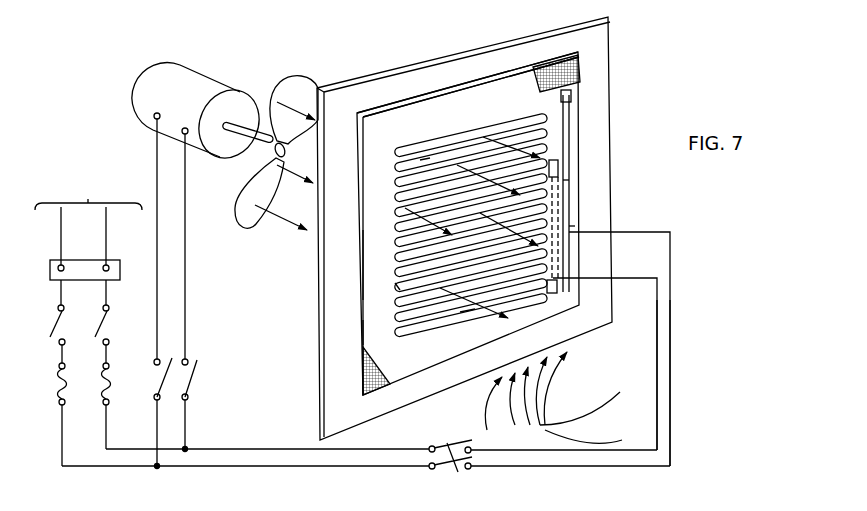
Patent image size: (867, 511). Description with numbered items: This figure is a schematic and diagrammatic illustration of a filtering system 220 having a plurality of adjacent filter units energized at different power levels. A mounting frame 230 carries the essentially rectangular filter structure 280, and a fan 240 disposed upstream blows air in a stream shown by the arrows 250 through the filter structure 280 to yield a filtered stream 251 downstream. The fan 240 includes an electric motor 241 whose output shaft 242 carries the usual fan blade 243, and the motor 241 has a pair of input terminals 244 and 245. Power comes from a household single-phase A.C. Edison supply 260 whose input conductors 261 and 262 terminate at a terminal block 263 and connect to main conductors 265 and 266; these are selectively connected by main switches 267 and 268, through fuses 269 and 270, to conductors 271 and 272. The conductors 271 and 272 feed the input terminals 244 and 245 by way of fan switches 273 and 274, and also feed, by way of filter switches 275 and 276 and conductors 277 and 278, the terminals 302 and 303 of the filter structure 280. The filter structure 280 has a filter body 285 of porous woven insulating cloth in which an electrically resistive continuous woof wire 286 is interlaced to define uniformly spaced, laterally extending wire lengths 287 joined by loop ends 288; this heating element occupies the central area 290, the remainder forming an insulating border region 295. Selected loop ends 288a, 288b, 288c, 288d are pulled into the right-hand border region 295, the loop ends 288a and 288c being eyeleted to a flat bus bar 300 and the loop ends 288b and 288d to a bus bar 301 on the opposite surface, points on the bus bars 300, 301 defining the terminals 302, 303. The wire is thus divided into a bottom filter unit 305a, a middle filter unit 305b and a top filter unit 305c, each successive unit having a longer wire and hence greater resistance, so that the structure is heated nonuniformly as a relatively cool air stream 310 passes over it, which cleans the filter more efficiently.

The filtering system 220 is at (672, 36).
The mounting frame 230 is at (610, 32).
The fan 240 is at (232, 72).
The electric motor 241 is at (172, 78).
The output shaft 242 is at (262, 133).
The fan blade 243 is at (318, 87).
The input terminal 244 is at (152, 113).
The input terminal 245 is at (186, 127).
The air stream arrows 250 is at (279, 222).
The filtered air stream 251 is at (467, 310).
The A.C. Edison supply 260 is at (132, 178).
The input conductor 261 is at (107, 236).
The input conductor 262 is at (61, 236).
The terminal block 263 is at (89, 267).
The main conductor 265 is at (106, 288).
The main conductor 266 is at (60, 304).
The main switch 267 is at (115, 300).
The main switch 268 is at (57, 325).
The fuse 269 is at (108, 383).
The fuse 270 is at (60, 385).
The conductor 271 is at (176, 452).
The conductor 272 is at (89, 467).
The fan switch 273 is at (190, 376).
The fan switch 274 is at (165, 372).
The filter switch 275 is at (446, 470).
The filter switch 276 is at (468, 470).
The conductor 277 is at (657, 425).
The conductor 278 is at (670, 393).
The filter structure 280 is at (507, 58).
The filter body 285 is at (461, 85).
The woof wire 286 is at (456, 128).
The wire lengths 287 is at (448, 206).
The loop ends 288 is at (540, 119).
The lower right-hand loop end 288a is at (548, 298).
The loop end 288b is at (569, 245).
The loop end 288c is at (556, 172).
The loop end 288d is at (568, 96).
The central area 290 is at (397, 287).
The insulating border region 295 is at (383, 322).
The bus bar 300 is at (575, 195).
The bus bar 301 is at (570, 184).
The input terminal 302 is at (568, 230).
The input terminal 303 is at (557, 290).
The bottom filter unit 305a is at (378, 362).
The middle filter unit 305b is at (397, 230).
The top filter unit 305c is at (358, 145).
The cool air stream 310 is at (553, 402).